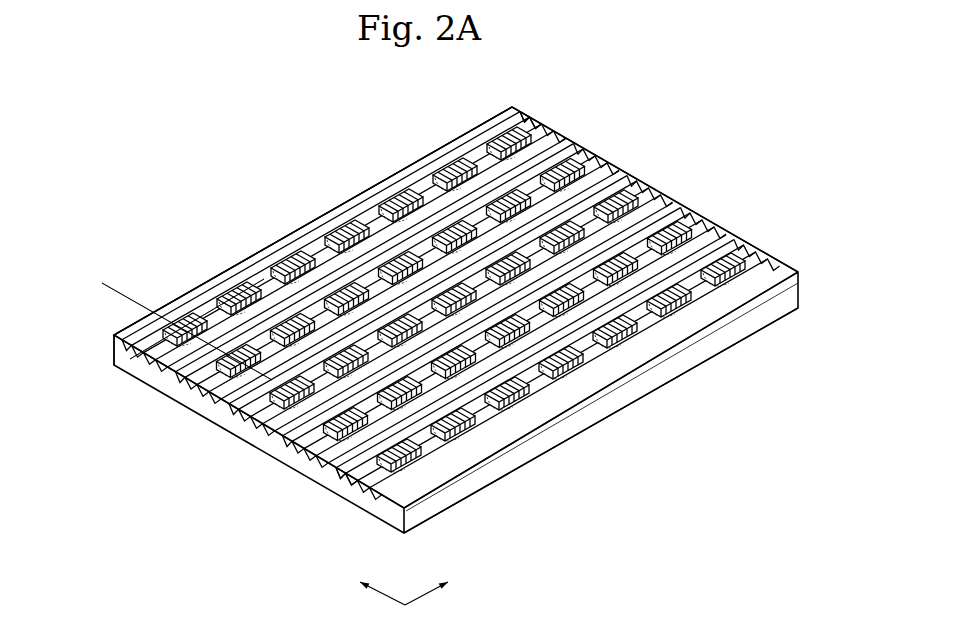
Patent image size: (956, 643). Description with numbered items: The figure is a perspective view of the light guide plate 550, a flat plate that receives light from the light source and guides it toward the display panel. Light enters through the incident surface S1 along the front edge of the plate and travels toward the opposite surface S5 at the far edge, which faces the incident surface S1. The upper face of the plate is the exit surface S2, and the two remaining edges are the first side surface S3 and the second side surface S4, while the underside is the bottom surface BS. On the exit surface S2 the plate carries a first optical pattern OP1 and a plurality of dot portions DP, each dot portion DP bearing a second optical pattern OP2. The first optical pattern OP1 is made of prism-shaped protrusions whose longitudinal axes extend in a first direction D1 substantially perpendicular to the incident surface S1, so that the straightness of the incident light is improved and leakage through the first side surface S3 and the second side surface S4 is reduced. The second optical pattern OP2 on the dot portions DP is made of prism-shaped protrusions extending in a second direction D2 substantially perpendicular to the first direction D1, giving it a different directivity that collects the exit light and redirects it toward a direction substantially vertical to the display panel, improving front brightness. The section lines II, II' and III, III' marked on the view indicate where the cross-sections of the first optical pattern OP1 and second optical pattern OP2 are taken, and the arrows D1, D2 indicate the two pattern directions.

The light guide plate 550 is at (630, 143).
The dot portions DP is at (322, 217).
The incident surface S1 is at (278, 452).
The exit surface S2 is at (368, 188).
The first side surface S3 is at (112, 358).
The second side surface S4 is at (635, 390).
The opposite surface S5 is at (693, 215).
The bottom surface BS is at (572, 442).
The first optical pattern OP1 is at (350, 470).
The second optical pattern OP2 is at (338, 218).
The section line II is at (159, 331).
The section line II prime II' is at (187, 365).
The section line III is at (167, 319).
The section line III prime III' is at (197, 301).
The first direction D1 is at (434, 581).
The second direction D2 is at (377, 581).